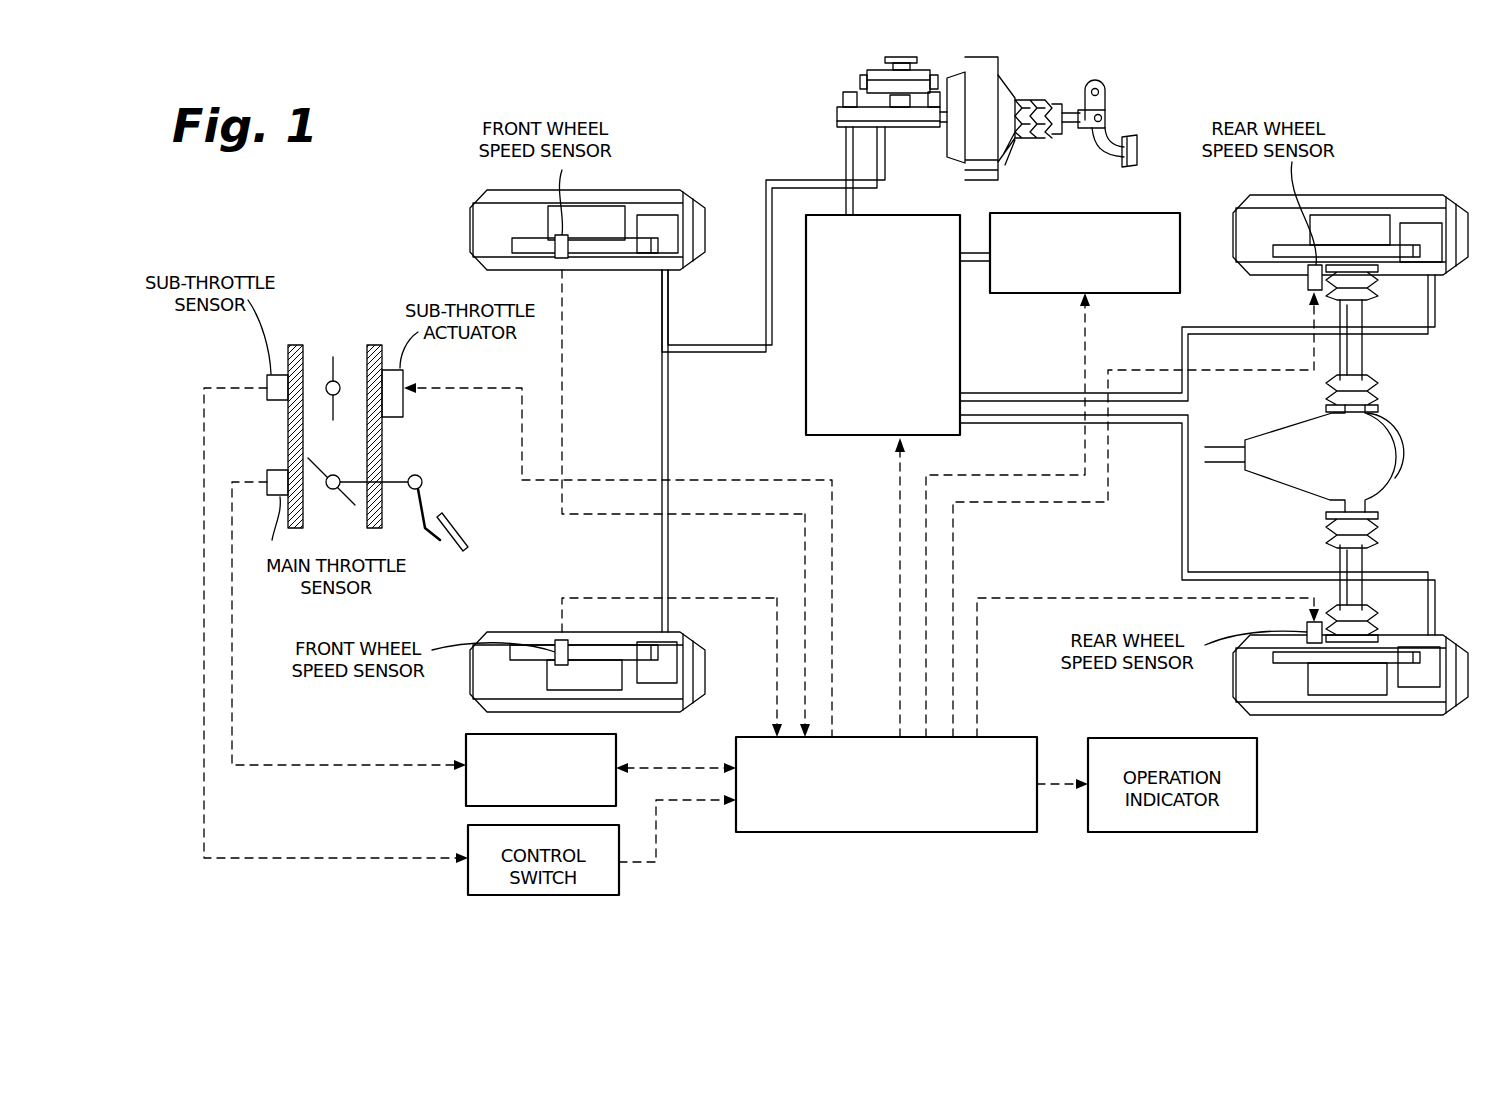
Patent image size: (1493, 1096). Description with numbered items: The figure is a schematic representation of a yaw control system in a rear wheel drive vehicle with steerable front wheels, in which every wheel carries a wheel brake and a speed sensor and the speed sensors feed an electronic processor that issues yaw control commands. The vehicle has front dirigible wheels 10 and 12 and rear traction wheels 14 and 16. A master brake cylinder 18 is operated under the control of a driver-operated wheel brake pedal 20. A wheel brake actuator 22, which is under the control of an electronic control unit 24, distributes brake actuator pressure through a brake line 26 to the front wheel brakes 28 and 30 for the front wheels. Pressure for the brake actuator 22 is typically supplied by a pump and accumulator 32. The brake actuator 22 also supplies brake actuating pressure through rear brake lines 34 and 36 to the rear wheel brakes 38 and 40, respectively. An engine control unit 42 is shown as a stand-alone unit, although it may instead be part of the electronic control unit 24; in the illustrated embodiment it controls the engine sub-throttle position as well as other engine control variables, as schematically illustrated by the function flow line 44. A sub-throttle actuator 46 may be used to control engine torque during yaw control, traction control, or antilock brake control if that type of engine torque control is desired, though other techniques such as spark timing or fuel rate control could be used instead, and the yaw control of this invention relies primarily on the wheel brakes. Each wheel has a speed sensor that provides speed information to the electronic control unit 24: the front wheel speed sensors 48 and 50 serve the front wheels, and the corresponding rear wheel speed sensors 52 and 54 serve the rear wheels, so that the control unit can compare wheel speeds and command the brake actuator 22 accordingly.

The front dirigible wheel 10 is at (558, 192).
The front dirigible wheel 12 is at (616, 629).
The rear traction wheel 14 is at (1359, 214).
The rear traction wheel 16 is at (1363, 613).
The master brake cylinder 18 is at (912, 128).
The wheel brake pedal 20 is at (1105, 93).
The wheel brake actuator 22 is at (806, 400).
The electronic control unit 24 is at (760, 832).
The brake line 26 is at (668, 548).
The front wheel brake 28 is at (613, 229).
The front wheel brake 30 is at (612, 666).
The pump and accumulator 32 is at (1035, 293).
The rear brake line 34 is at (1188, 340).
The rear brake line 36 is at (1222, 572).
The rear wheel brake 38 is at (1376, 238).
The rear wheel brake 40 is at (1374, 671).
The engine control unit 42 is at (466, 778).
The function flow line 44 is at (518, 410).
The sub-throttle actuator 46 is at (375, 370).
The front wheel speed sensor 48 is at (560, 240).
The front wheel speed sensor 50 is at (561, 652).
The rear wheel speed sensor 52 is at (1308, 285).
The rear wheel speed sensor 54 is at (1312, 622).